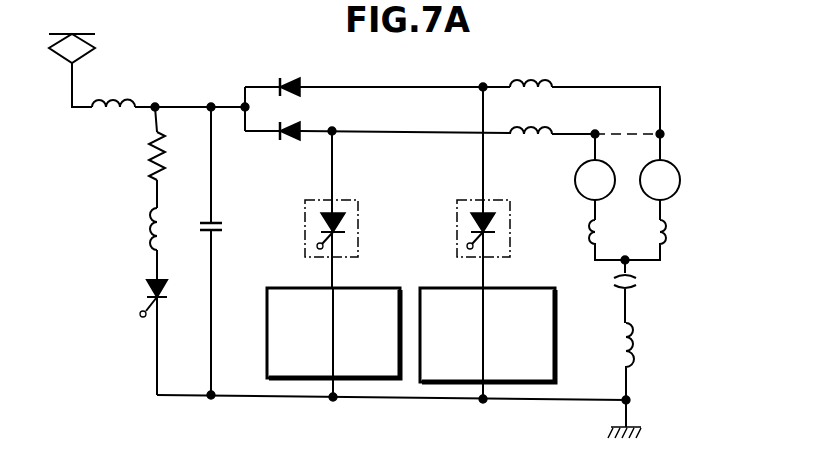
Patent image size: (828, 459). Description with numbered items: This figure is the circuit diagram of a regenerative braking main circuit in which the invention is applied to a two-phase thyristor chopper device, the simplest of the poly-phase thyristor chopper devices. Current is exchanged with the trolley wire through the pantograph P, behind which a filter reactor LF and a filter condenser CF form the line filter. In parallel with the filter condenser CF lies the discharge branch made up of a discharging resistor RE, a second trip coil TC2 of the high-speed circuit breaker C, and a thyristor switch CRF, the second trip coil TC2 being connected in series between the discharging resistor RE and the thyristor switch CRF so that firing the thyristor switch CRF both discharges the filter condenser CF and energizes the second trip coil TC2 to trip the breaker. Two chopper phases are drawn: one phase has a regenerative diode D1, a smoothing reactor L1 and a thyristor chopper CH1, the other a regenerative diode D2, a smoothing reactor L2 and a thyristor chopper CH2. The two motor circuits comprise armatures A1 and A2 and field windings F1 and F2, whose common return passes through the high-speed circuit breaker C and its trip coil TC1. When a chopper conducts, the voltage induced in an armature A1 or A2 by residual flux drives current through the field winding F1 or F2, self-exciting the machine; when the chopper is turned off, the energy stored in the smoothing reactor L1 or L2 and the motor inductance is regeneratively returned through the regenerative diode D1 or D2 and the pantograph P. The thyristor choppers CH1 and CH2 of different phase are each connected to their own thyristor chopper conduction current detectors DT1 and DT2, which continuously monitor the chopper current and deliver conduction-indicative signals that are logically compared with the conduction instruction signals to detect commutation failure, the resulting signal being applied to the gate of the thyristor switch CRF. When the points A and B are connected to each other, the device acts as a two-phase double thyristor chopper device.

The pantograph P is at (97, 47).
The filter reactor LF is at (118, 98).
The discharging resistor RE is at (149, 162).
The second trip coil TC2 is at (152, 232).
The thyristor switch CRF is at (153, 278).
The filter condenser CF is at (224, 222).
The regenerative diode D1 is at (300, 117).
The regenerative diode D2 is at (305, 72).
The smoothing reactor L1 is at (532, 145).
The smoothing reactor L2 is at (536, 70).
The point A is at (595, 121).
The point B is at (667, 121).
The armature A1 is at (574, 183).
The armature A2 is at (685, 181).
The field winding F1 is at (594, 229).
The field winding F2 is at (675, 232).
The high-speed circuit breaker C is at (645, 283).
The trip coil TC1 is at (640, 345).
The thyristor chopper CH1 is at (360, 225).
The thyristor chopper CH2 is at (500, 261).
The thyristor chopper conduction current detector DT1 is at (263, 349).
The thyristor chopper conduction current detector DT2 is at (558, 350).